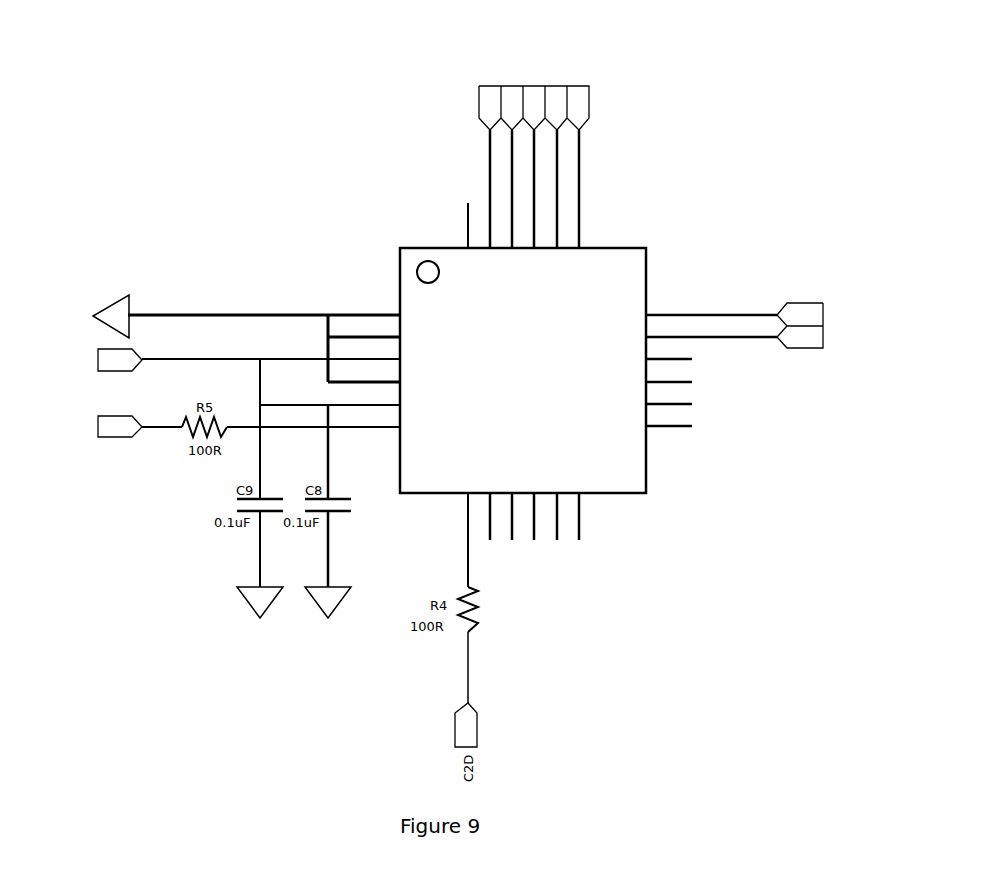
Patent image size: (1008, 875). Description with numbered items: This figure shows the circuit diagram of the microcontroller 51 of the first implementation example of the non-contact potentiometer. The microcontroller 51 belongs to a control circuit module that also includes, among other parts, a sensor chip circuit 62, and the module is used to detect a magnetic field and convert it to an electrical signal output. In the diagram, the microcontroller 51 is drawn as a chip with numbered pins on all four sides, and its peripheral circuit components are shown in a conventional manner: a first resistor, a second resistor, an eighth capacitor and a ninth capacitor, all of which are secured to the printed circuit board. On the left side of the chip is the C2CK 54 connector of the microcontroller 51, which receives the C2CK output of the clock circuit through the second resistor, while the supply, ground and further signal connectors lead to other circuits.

The microcontroller 51 is at (400, 248).
The C2CK connector 54 is at (113, 438).
The sensor chip circuit 62 is at (480, 871).